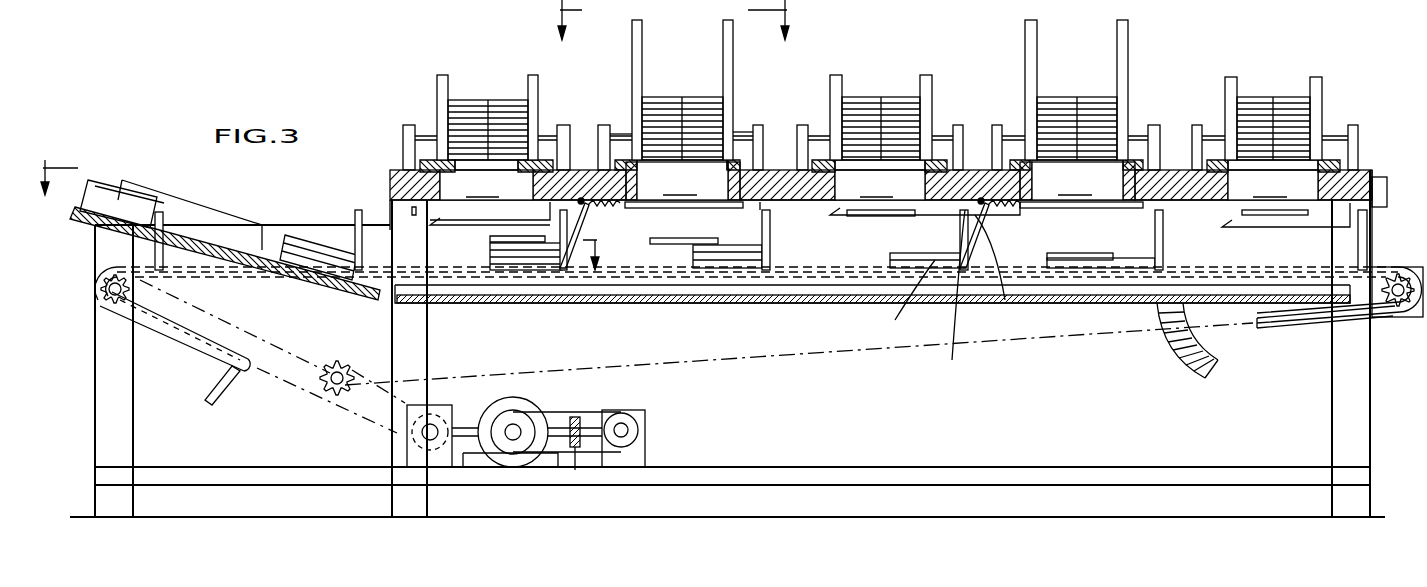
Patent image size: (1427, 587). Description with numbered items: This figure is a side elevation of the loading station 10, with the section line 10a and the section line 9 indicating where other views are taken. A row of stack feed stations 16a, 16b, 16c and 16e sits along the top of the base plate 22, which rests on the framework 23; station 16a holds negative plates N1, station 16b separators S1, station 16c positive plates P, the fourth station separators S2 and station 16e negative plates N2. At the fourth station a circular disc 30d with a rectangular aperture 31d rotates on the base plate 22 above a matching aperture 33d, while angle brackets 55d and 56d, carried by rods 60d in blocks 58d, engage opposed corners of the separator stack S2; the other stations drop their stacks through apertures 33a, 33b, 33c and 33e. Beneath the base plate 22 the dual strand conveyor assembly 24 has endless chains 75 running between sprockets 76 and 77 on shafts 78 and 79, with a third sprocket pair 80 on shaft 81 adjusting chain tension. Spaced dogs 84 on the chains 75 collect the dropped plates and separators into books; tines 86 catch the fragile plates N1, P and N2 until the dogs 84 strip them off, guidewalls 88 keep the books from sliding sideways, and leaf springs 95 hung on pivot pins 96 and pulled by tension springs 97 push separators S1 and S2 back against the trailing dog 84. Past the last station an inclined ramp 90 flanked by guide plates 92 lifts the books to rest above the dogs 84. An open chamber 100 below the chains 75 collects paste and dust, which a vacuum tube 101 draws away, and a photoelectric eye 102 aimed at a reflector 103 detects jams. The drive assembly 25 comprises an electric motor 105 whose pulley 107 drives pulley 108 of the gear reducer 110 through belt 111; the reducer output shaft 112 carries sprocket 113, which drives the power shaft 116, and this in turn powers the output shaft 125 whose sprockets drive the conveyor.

The loading station 10 is at (1343, 68).
The section line 10a is at (673, 20).
The section line 9 is at (320, 204).
The stack feed station 16a is at (1217, 95).
The stack feed station 16b is at (1020, 65).
The stack feed station 16c is at (826, 90).
The stack feed station 16e is at (428, 75).
The base plate 22 is at (1372, 170).
The framework 23 is at (1375, 387).
The dual strand conveyor assembly 24 is at (1408, 322).
The drive assembly 25 is at (583, 425).
The circular disc 30d is at (740, 160).
The rectangular aperture 31d is at (655, 210).
The rectangular aperture 33a is at (1273, 185).
The rectangular aperture 33b is at (1081, 185).
The rectangular aperture 33c is at (880, 185).
The rectangular aperture 33d is at (684, 185).
The rectangular aperture 33e is at (486, 185).
The angle bracket 55d is at (733, 80).
The angle bracket 56d is at (632, 47).
The block 58d is at (603, 140).
The horizontally extending rod 60d is at (622, 130).
The endless chain 75 is at (915, 297).
The sprocket 76 is at (1398, 267).
The sprocket 77 is at (95, 300).
The horizontal shaft 78 is at (1390, 318).
The horizontal shaft 79 is at (108, 310).
The third sprocket pair 80 is at (348, 363).
The shaft 81 is at (335, 360).
The dog 84 is at (220, 390).
The tine 86 is at (430, 222).
The vertical guidewall 88 is at (343, 225).
The inclined ramp 90 is at (88, 222).
The inclined vertical guidewall 92 is at (200, 215).
The leaf spring 95 is at (952, 296).
The pivot pin 96 is at (995, 218).
The tension spring 97 is at (1005, 300).
The open topped chamber 100 is at (752, 305).
The vacuum tube 101 is at (1185, 370).
The photoelectric eye 102 is at (1385, 180).
The reflector 103 is at (390, 207).
The electric motor 105 is at (520, 405).
The pulley 107 is at (510, 445).
The pulley 108 is at (645, 420).
The gear reducer unit 110 is at (645, 446).
The drive belt 111 is at (590, 412).
The output shaft 112 is at (656, 422).
The sprocket 113 is at (575, 447).
The power shaft 116 is at (575, 440).
The power output shaft 125 is at (430, 432).
The positive plate P is at (893, 100).
The separator S1 is at (1075, 97).
The separator S2 is at (690, 97).
The negative plate N1 is at (1262, 97).
The negative plate N2 is at (478, 100).